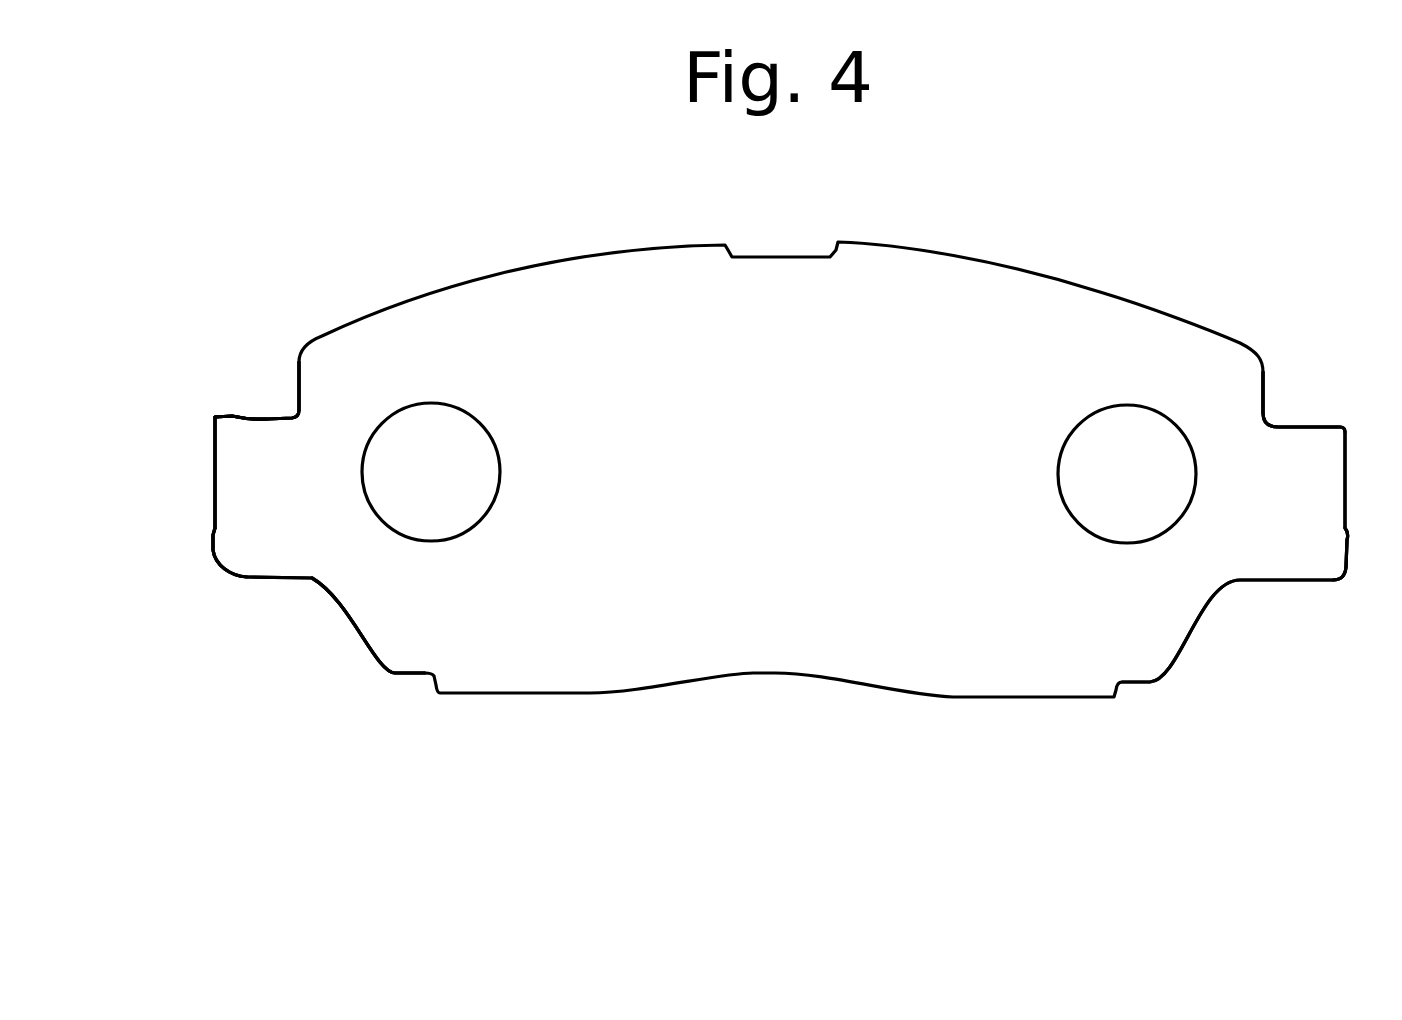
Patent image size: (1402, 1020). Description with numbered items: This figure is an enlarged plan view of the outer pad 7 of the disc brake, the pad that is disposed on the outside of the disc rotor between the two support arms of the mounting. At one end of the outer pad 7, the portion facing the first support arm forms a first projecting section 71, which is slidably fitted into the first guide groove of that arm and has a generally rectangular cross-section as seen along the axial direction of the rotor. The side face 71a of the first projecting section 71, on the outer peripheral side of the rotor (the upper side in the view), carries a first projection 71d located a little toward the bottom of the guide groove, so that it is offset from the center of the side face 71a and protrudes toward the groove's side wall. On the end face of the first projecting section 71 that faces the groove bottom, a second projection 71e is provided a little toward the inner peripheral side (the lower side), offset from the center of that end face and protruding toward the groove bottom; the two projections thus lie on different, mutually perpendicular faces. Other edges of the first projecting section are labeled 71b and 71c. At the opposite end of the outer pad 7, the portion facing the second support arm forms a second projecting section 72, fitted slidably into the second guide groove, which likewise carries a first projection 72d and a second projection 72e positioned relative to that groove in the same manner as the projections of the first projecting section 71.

The outer pad 7 is at (937, 267).
The first projecting section 71 is at (270, 530).
The side face of the first projecting section 71a is at (272, 418).
The side edge of first ear portion 71b is at (212, 467).
The lower curved edge of first ear portion 71c is at (308, 580).
The first projection 71d is at (225, 415).
The second projection 71e is at (210, 550).
The second projecting section 72 is at (1273, 565).
The first projection 72d is at (1328, 420).
The second projection 72e is at (1340, 570).